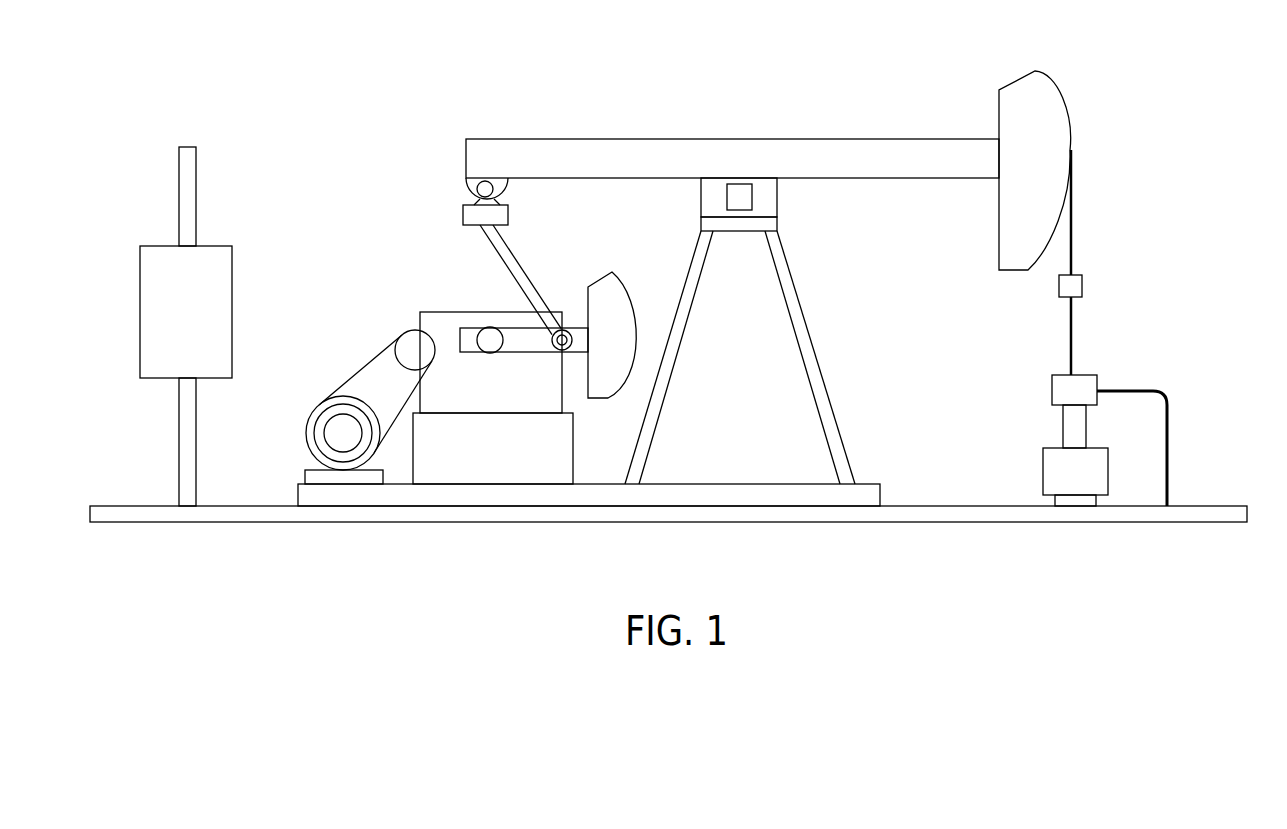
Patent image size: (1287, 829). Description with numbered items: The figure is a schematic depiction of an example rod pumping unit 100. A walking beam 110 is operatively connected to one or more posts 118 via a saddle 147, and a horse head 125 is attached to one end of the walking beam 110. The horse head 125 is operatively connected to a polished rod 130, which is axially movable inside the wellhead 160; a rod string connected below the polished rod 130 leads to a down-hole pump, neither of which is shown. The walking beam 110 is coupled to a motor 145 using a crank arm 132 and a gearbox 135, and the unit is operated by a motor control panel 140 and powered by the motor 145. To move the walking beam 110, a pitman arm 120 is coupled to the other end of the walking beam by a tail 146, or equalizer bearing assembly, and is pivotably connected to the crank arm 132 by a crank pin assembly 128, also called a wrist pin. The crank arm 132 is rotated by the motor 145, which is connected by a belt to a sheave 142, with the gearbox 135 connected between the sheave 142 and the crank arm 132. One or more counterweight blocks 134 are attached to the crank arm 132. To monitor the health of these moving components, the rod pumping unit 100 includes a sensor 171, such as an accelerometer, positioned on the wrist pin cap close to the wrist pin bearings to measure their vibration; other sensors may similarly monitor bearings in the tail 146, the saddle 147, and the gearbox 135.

The rod pumping unit 100 is at (908, 66).
The walking beam 110 is at (913, 178).
The posts 118 is at (688, 327).
The pitman arm 120 is at (508, 240).
The horse head 125 is at (1053, 82).
The crank pin assembly 128 is at (565, 353).
The polished rod 130 is at (1071, 334).
The crank arm 132 is at (500, 353).
The counterweight blocks 134 is at (626, 283).
The gearbox 135 is at (455, 312).
The motor control panel 140 is at (232, 330).
The sheave 142 is at (412, 340).
The motor 145 is at (304, 441).
The tail 146 is at (476, 189).
The saddle 147 is at (737, 193).
The wellhead 160 is at (1052, 393).
The sensor 171 is at (562, 330).